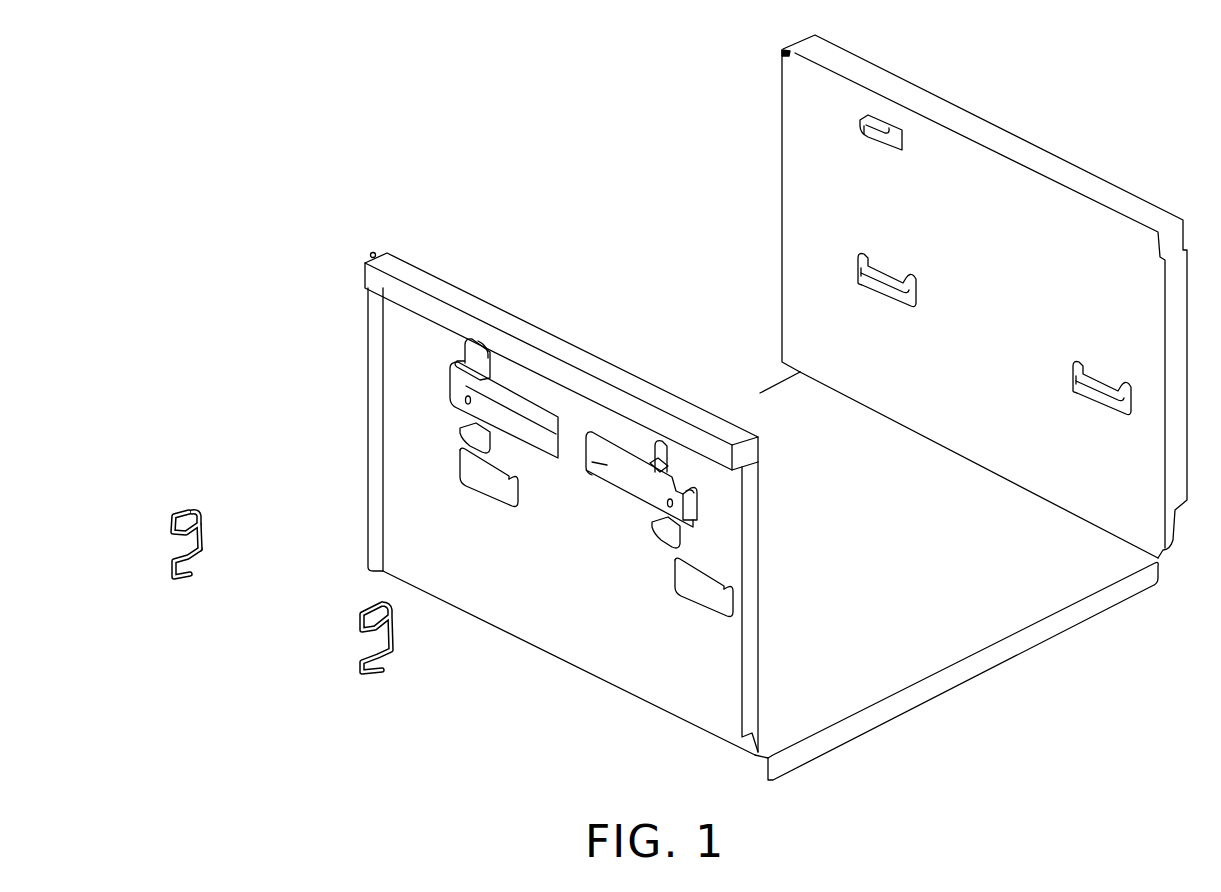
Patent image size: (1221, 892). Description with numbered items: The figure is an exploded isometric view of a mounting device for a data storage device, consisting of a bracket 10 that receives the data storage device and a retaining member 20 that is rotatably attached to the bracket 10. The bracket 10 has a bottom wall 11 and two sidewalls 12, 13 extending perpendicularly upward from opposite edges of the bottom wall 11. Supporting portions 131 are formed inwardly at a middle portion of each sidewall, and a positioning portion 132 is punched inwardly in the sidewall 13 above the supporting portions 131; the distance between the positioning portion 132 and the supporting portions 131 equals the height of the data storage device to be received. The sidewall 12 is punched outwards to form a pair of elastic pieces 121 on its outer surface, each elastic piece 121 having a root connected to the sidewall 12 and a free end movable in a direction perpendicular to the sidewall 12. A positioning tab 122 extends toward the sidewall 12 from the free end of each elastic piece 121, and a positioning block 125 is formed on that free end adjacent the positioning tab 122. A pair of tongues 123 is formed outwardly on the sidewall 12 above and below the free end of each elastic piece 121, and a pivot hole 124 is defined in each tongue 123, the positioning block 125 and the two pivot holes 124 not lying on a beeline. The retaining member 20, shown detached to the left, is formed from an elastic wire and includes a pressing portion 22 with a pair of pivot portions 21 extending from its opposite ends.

The bracket 10 is at (1037, 140).
The bottom wall 11 is at (973, 603).
The sidewall 12 is at (648, 658).
The sidewall 13 is at (805, 108).
The retaining member 20 is at (178, 505).
The pivot portion 21 is at (187, 510).
The pressing portion 22 is at (202, 538).
The elastic piece 121 is at (597, 463).
The positioning tab 122 is at (688, 488).
The tongue 123 is at (650, 460).
The pivot hole 124 is at (655, 467).
The positioning block 125 is at (668, 503).
The supporting portion 131 is at (882, 272).
The positioning portion 132 is at (877, 127).